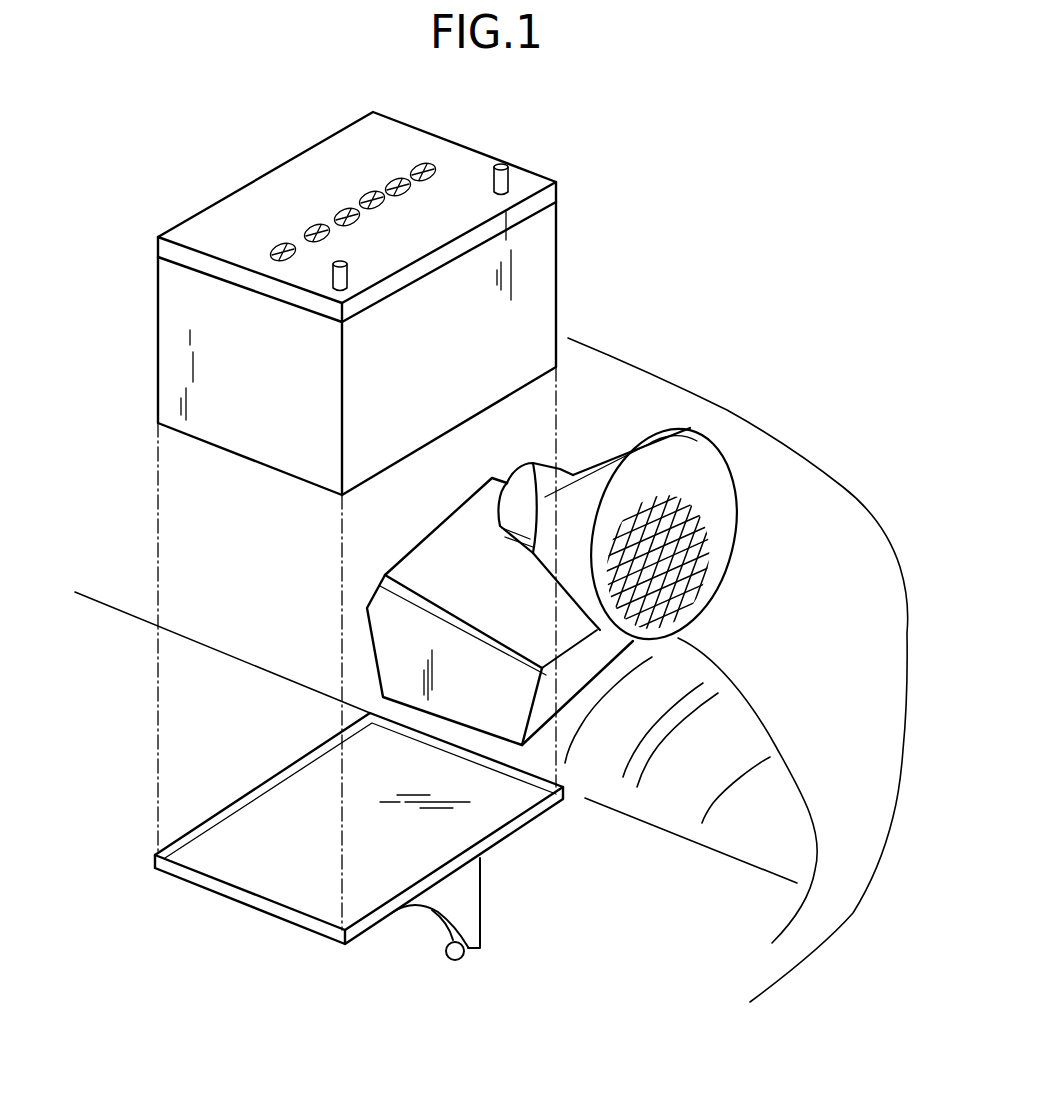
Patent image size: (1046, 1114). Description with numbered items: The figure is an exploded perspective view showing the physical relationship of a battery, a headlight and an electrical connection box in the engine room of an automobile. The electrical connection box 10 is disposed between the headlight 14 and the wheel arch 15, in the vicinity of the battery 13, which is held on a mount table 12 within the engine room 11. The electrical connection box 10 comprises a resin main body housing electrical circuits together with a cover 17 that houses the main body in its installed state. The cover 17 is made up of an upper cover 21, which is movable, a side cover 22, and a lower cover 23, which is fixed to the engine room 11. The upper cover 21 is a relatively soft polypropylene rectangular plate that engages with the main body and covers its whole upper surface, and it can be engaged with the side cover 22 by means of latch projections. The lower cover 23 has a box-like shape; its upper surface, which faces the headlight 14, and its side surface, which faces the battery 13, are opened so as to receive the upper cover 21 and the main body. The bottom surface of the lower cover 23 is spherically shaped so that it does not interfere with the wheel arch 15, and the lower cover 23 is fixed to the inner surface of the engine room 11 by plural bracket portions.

The electrical connection box 10 is at (370, 541).
The engine room 11 is at (541, 896).
The mount table 12 is at (265, 907).
The battery 13 is at (535, 240).
The headlight 14 is at (700, 453).
The wheel arch 15 is at (750, 718).
The cover 17 is at (478, 470).
The upper cover 21 is at (443, 547).
The side cover 22 is at (393, 630).
The lower cover 23 is at (577, 677).